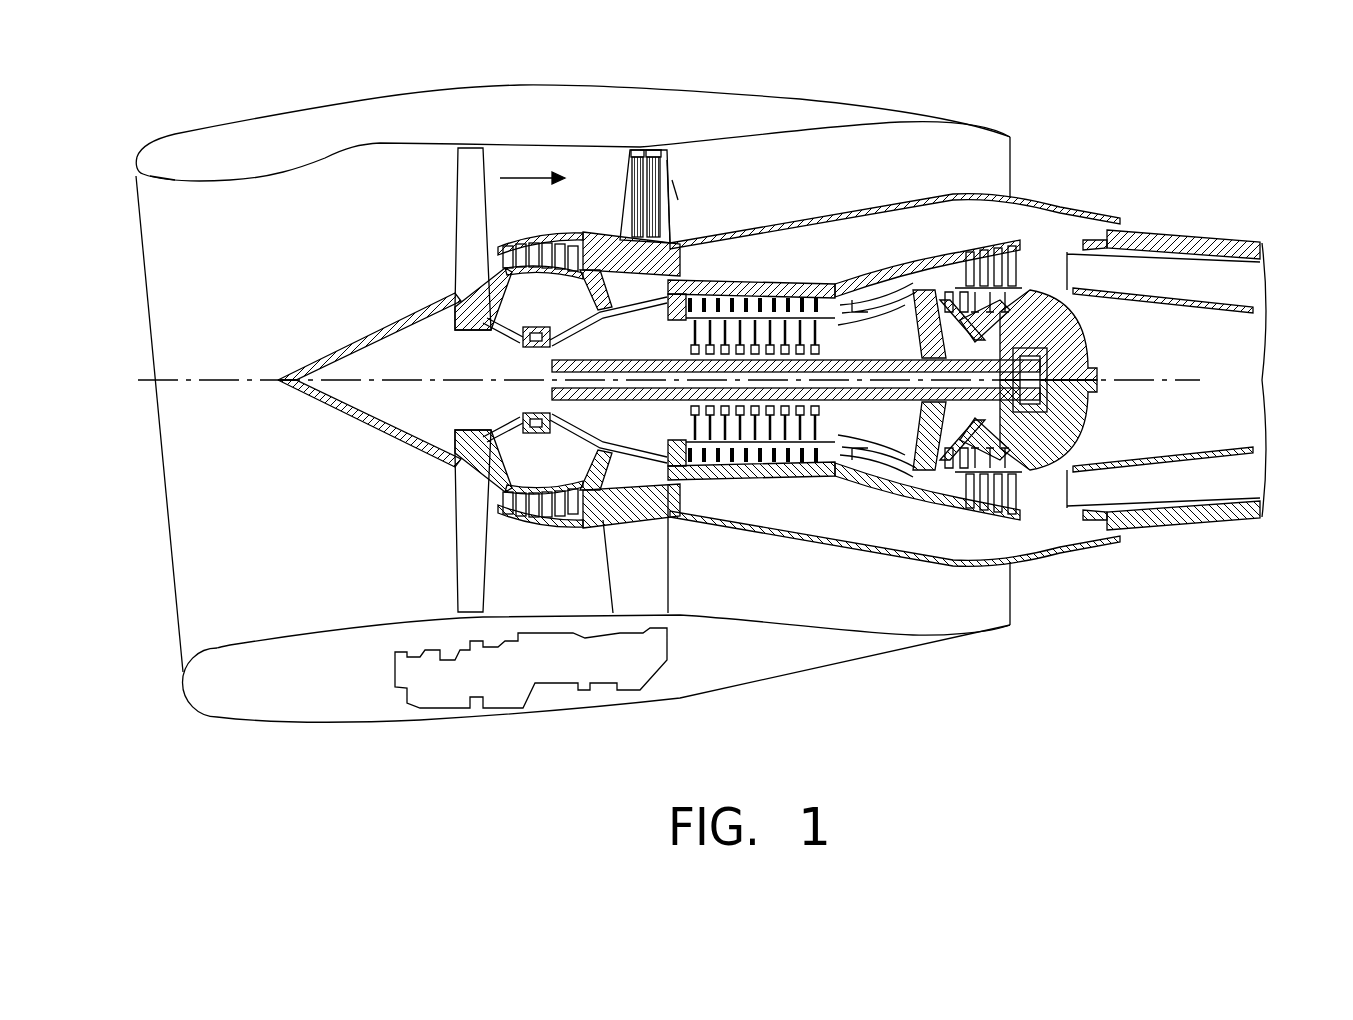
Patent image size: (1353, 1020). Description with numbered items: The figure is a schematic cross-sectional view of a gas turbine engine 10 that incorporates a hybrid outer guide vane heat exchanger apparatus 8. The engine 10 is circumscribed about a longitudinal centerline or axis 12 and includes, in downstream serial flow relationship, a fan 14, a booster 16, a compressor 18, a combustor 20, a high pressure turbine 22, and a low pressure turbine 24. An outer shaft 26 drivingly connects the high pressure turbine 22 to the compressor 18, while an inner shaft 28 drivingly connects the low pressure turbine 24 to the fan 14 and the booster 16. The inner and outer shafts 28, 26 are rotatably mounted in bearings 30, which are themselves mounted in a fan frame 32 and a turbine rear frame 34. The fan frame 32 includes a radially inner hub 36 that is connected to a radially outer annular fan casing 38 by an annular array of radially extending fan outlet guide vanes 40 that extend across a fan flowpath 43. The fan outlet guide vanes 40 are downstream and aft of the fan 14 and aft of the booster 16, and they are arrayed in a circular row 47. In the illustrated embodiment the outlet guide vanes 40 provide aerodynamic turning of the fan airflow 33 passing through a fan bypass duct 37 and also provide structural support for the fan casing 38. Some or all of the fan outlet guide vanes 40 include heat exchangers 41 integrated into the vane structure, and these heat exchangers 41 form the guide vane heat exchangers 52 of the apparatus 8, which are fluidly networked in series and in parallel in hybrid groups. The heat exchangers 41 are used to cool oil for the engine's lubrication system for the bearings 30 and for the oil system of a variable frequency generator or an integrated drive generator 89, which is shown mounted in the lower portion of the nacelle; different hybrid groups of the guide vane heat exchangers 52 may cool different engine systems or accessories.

The hybrid outer guide vane heat exchanger apparatus 8 is at (683, 176).
The gas turbine engine 10 is at (1043, 156).
The longitudinal centerline or axis 12 is at (203, 378).
The fan 14 is at (467, 497).
The booster 16 is at (532, 528).
The compressor 18 is at (748, 468).
The combustor 20 is at (862, 457).
The high pressure turbine 22 is at (933, 494).
The low pressure turbine 24 is at (996, 524).
The outer shaft 26 is at (898, 398).
The inner shaft 28 is at (898, 362).
The bearings 30 is at (534, 328).
The fan frame 32 is at (663, 210).
The fan airflow 33 is at (515, 170).
The turbine rear frame 34 is at (1050, 263).
The radially inner hub 36 is at (655, 260).
The fan bypass duct 37 is at (895, 360).
The radially outer annular fan casing 38 is at (633, 160).
The fan outlet guide vanes 40 is at (622, 197).
The heat exchangers 41 is at (633, 172).
The fan flowpath 43 is at (242, 205).
The circular row 47 is at (657, 146).
The guide vane heat exchangers 52 is at (673, 187).
The integrated drive generator 89 is at (500, 672).